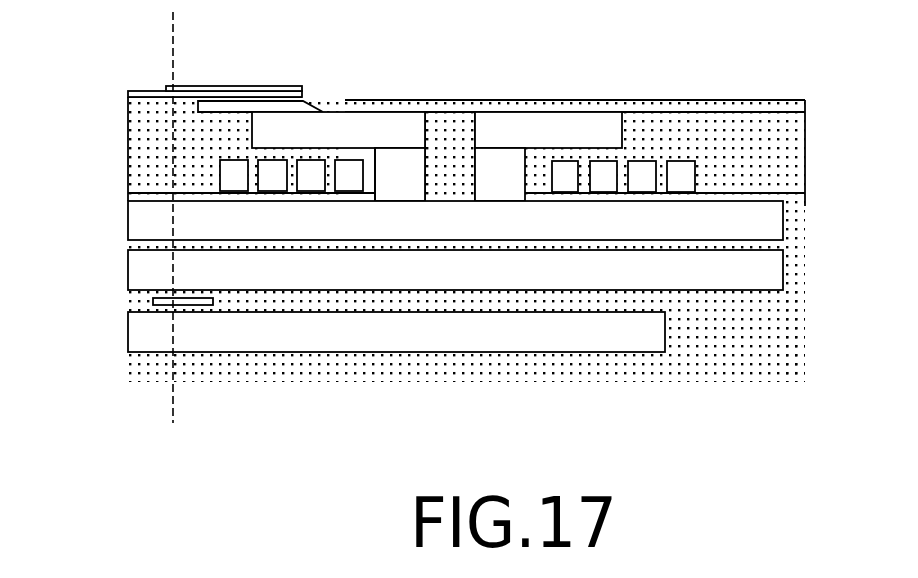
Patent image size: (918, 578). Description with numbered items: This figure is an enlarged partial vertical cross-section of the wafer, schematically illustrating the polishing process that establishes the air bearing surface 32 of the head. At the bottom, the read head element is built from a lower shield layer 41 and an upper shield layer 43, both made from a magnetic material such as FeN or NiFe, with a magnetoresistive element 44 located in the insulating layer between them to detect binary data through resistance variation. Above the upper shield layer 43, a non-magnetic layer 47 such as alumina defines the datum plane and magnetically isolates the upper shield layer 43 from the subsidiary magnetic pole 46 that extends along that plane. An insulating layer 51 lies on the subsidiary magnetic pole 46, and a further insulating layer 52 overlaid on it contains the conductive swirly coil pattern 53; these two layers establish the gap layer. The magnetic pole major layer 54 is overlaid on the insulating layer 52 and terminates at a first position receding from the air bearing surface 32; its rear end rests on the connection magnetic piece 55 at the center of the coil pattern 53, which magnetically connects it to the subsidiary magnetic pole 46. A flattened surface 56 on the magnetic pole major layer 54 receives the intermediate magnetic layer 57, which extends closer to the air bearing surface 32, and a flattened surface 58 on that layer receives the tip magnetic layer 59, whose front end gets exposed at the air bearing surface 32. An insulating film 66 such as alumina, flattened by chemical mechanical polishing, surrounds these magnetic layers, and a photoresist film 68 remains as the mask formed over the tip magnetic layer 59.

The air bearing surface 32 is at (173, 413).
The lower shield layer 41 is at (140, 341).
The upper shield layer 43 is at (140, 265).
The magnetoresistive element 44 is at (152, 298).
The subsidiary magnetic pole 46 is at (140, 218).
The non-magnetic layer 47 is at (140, 245).
The insulating layer 51 is at (130, 195).
The insulating layer 52 is at (130, 157).
The conductive swirly coil pattern 53 is at (315, 160).
The magnetic pole major layer 54 is at (252, 140).
The connection magnetic piece 55 is at (425, 175).
The flattened surface 56 is at (787, 113).
The intermediate magnetic layer 57 is at (298, 75).
The flattened surface 58 is at (757, 100).
The tip magnetic layer 59 is at (185, 93).
The insulating film 66 is at (510, 100).
The photoresist film 68 is at (208, 88).